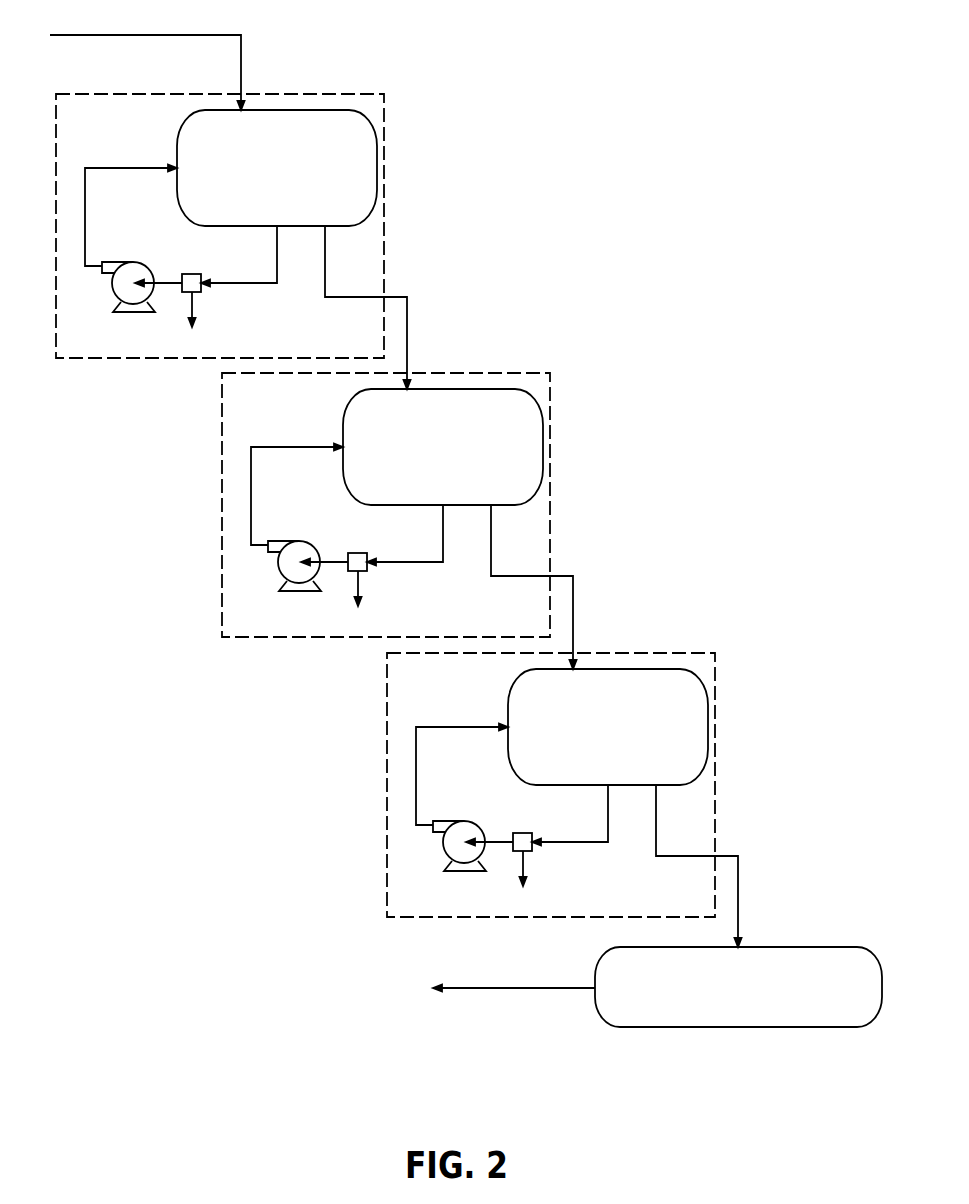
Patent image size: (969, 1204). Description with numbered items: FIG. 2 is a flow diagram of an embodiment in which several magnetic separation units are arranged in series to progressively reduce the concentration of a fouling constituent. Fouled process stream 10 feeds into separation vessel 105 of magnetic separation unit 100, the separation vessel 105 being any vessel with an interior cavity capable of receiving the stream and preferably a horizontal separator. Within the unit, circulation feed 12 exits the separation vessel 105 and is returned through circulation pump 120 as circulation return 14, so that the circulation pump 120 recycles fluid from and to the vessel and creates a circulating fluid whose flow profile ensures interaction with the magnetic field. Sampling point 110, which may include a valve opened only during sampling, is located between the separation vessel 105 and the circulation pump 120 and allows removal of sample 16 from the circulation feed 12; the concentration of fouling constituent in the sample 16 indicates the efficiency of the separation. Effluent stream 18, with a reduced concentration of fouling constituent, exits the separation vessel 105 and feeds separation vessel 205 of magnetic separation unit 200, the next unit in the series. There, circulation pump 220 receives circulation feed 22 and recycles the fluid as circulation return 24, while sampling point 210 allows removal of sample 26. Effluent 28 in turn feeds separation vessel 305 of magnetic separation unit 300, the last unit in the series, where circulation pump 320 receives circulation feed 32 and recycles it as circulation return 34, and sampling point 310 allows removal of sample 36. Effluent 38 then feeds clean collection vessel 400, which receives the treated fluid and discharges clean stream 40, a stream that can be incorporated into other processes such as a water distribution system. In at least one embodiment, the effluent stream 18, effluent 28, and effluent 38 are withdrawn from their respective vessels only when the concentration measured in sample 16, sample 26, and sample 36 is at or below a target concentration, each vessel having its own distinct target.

The fouled process stream 10 is at (243, 60).
The magnetic separation unit 100 is at (118, 130).
The separation vessel 105 is at (306, 182).
The sampling point 110 is at (193, 273).
The circulation pump 120 is at (132, 313).
The circulation feed 12 is at (276, 260).
The circulation return 14 is at (86, 189).
The sample 16 is at (196, 305).
The effluent stream 18 is at (368, 300).
The magnetic separation unit 200 is at (284, 410).
The separation vessel 205 is at (472, 461).
The sampling point 210 is at (359, 552).
The circulation pump 220 is at (298, 592).
The circulation feed 22 is at (442, 539).
The circulation return 24 is at (252, 468).
The sample 26 is at (362, 584).
The effluent 28 is at (534, 579).
The magnetic separation unit 300 is at (449, 690).
The separation vessel 305 is at (637, 741).
The sampling point 310 is at (524, 832).
The circulation pump 320 is at (463, 872).
The circulation feed 32 is at (607, 819).
The circulation return 34 is at (417, 748).
The sample 36 is at (527, 864).
The effluent 38 is at (699, 859).
The clean collection vessel 400 is at (763, 1000).
The clean stream 40 is at (528, 990).